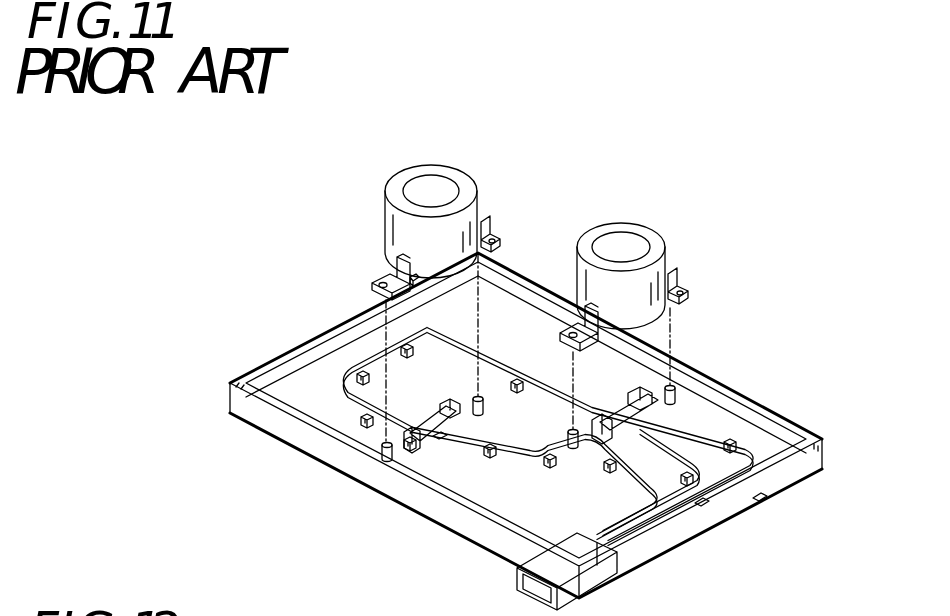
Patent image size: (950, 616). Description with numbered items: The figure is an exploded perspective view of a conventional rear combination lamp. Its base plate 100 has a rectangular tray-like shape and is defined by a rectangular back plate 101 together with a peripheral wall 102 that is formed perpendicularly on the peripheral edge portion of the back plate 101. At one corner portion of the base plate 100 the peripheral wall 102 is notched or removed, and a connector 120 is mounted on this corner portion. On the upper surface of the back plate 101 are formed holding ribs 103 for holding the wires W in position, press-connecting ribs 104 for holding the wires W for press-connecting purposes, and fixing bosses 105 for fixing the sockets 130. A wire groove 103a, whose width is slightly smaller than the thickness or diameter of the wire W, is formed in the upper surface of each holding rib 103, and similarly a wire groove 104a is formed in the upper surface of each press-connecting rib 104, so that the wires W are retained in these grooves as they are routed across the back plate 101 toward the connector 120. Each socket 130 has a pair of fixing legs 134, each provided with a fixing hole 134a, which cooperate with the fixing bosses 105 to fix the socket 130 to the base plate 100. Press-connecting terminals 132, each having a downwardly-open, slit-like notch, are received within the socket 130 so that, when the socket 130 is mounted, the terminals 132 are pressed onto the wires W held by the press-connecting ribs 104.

The base plate 100 is at (257, 356).
The back plate 101 is at (265, 413).
The peripheral wall 102 is at (292, 404).
The holding rib 103 is at (400, 343).
The wire groove 103a is at (723, 441).
The press-connecting rib 104 is at (618, 412).
The wire groove 104a is at (437, 441).
The fixing boss 105 is at (678, 386).
The connector 120 is at (516, 575).
The socket 130 is at (364, 212).
The press-connecting terminal 132 is at (418, 283).
The fixing leg 134 is at (494, 235).
The fixing hole 134a is at (488, 232).
The wire W is at (328, 391).